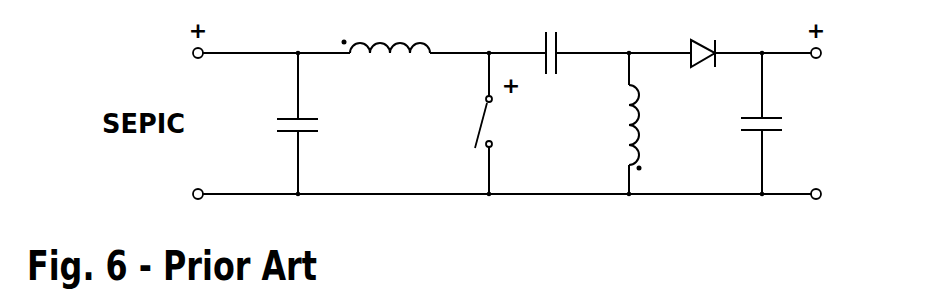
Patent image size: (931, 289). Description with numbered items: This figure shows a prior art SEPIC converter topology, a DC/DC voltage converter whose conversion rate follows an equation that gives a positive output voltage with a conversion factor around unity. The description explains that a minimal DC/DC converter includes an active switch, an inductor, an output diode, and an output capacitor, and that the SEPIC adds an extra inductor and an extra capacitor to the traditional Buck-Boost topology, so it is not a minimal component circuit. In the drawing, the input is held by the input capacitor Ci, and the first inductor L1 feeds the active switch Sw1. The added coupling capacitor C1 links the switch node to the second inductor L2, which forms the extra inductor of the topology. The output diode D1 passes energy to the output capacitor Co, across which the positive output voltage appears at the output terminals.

The first inductor L1 is at (386, 29).
The coupling capacitor C1 is at (553, 37).
The diode D1 is at (708, 34).
The input capacitor Ci is at (318, 123).
The switch Sw1 is at (452, 122).
The second inductor L2 is at (607, 128).
The output capacitor Co is at (786, 123).